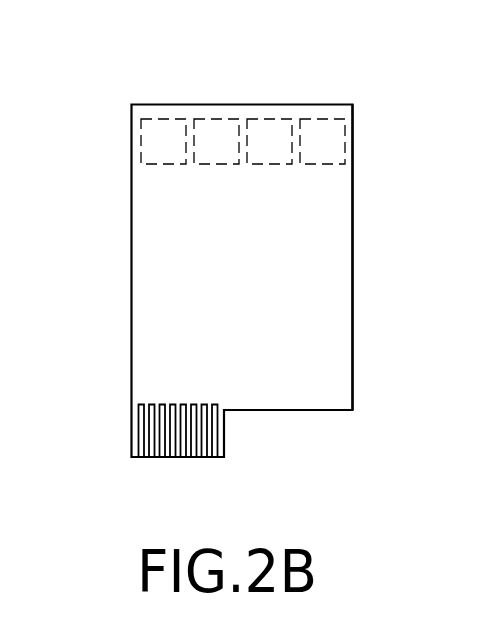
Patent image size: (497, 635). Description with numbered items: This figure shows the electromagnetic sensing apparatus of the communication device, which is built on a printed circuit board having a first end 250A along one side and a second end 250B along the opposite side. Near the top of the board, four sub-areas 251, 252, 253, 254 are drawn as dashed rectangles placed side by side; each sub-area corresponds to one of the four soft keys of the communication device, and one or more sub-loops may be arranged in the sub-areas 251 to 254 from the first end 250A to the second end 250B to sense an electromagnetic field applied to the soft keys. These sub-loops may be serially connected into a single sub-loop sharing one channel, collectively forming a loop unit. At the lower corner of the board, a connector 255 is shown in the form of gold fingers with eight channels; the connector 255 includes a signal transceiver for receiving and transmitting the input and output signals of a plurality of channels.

The first end 250A is at (131, 261).
The second end 250B is at (353, 256).
The sub-area 251 is at (163, 119).
The sub-area 252 is at (216, 119).
The sub-area 253 is at (267, 119).
The sub-area 254 is at (321, 119).
The connector 255 is at (124, 402).